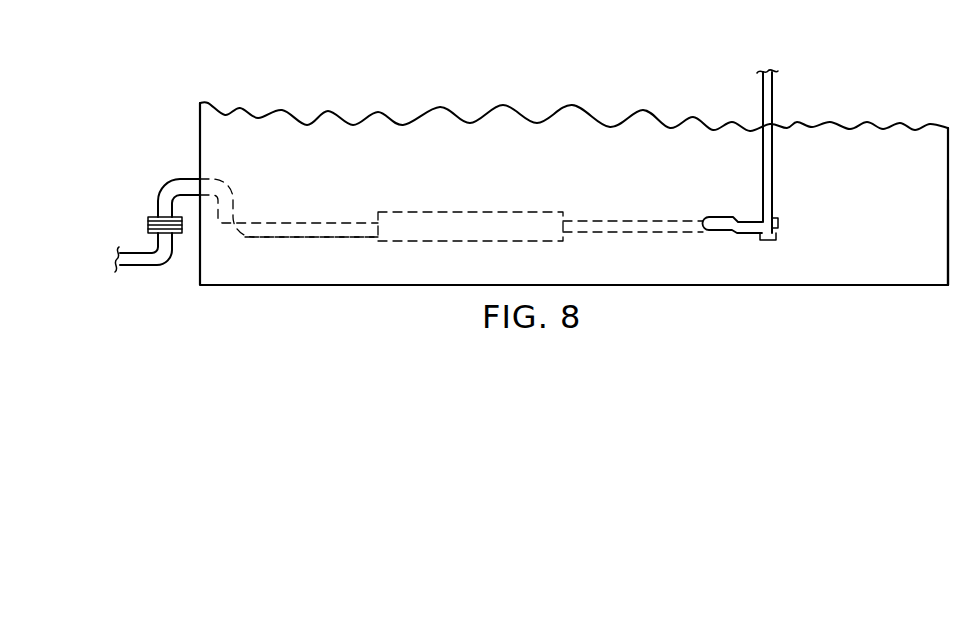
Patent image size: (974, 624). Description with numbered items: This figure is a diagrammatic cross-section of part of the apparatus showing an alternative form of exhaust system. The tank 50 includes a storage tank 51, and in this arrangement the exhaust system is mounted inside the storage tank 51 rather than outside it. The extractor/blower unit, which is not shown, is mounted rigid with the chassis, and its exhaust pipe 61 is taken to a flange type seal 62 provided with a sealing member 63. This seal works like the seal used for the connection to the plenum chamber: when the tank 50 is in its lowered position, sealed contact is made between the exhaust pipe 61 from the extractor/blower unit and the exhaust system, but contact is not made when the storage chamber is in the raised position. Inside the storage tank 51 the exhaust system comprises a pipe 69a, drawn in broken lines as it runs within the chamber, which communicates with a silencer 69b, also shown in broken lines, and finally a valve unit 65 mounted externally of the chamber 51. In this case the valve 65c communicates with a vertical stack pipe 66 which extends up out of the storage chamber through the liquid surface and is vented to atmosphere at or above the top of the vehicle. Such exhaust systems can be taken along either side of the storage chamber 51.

The tank 50 is at (899, 110).
The storage tank 51 is at (880, 245).
The exhaust pipe 61 is at (137, 262).
The flange type seal 62 is at (134, 194).
The sealing member 63 is at (150, 223).
The valve unit 65 is at (755, 245).
The valve 65c is at (775, 218).
The vertical stack pipe 66 is at (767, 108).
The pipe 69a is at (305, 228).
The silencer 69b is at (412, 230).